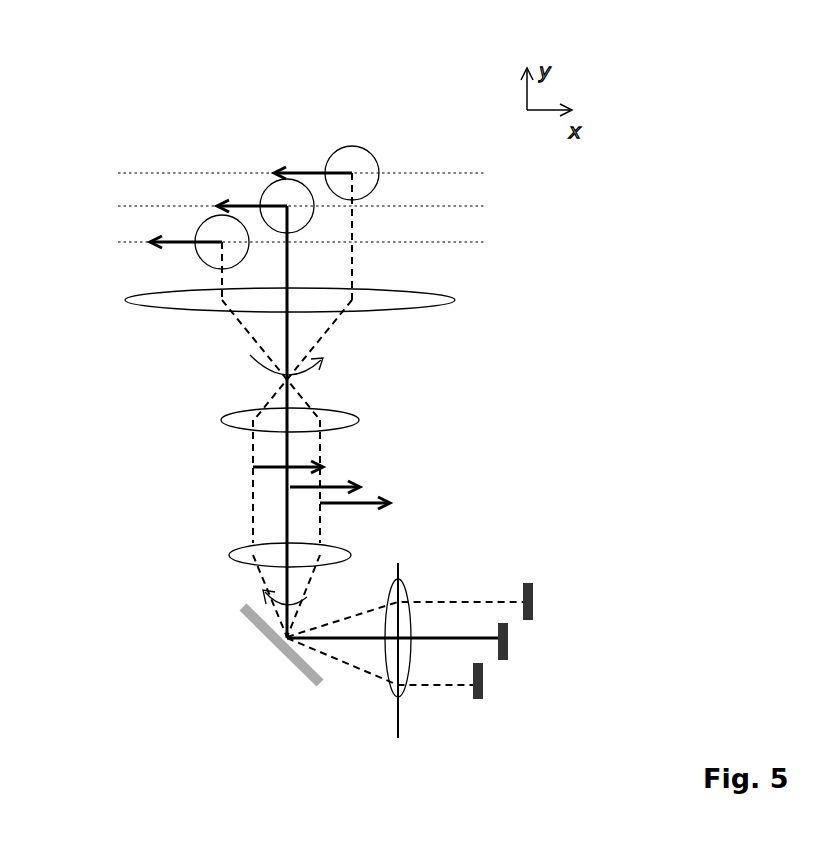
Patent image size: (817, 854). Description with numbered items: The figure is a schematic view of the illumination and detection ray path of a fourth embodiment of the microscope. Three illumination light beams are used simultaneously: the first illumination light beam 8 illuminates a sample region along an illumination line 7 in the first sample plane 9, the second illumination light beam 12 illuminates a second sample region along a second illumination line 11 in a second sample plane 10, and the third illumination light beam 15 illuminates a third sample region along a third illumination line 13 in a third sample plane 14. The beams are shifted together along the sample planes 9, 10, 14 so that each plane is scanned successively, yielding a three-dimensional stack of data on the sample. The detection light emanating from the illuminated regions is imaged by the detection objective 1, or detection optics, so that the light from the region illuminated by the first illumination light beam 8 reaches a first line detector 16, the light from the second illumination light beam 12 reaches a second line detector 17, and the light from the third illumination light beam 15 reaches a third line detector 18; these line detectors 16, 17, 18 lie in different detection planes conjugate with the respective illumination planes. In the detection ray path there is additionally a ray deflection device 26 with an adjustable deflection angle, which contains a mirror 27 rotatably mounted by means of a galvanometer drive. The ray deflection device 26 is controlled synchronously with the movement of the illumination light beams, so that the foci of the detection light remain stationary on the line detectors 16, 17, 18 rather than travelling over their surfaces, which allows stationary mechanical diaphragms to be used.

The detection objective 1 is at (430, 339).
The illumination line 7 is at (367, 173).
The first illumination light beam 8 is at (350, 158).
The first sample plane 9 is at (468, 173).
The second sample plane 10 is at (467, 208).
The second illumination line 11 is at (285, 207).
The second illumination light beam 12 is at (276, 193).
The third illumination line 13 is at (220, 242).
The third sample plane 14 is at (463, 242).
The third illumination light beam 15 is at (207, 227).
The first line detector 16 is at (483, 678).
The second line detector 17 is at (507, 640).
The third line detector 18 is at (533, 598).
The ray deflection device 26 is at (194, 685).
The mirror 27 is at (258, 626).